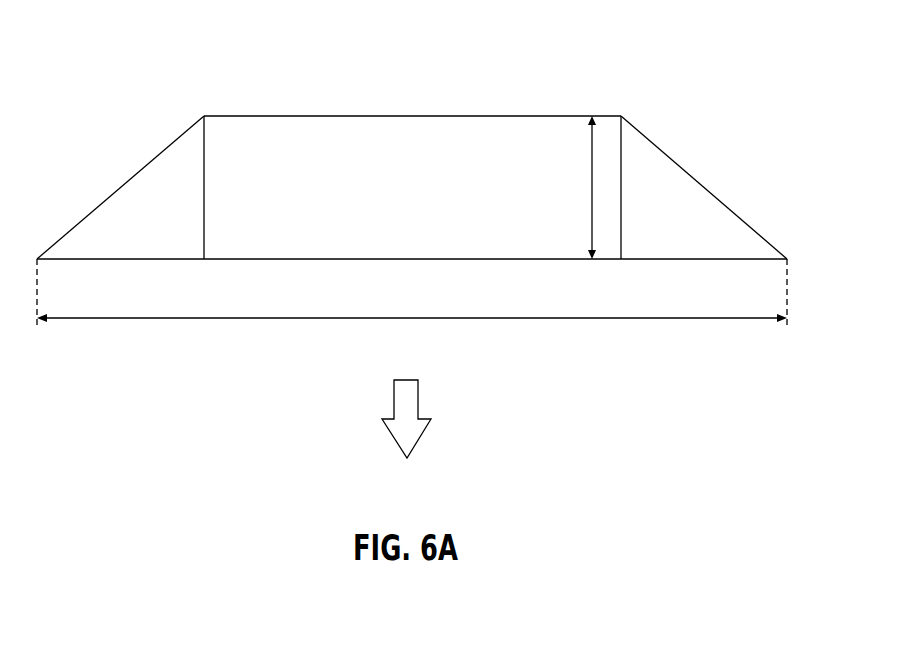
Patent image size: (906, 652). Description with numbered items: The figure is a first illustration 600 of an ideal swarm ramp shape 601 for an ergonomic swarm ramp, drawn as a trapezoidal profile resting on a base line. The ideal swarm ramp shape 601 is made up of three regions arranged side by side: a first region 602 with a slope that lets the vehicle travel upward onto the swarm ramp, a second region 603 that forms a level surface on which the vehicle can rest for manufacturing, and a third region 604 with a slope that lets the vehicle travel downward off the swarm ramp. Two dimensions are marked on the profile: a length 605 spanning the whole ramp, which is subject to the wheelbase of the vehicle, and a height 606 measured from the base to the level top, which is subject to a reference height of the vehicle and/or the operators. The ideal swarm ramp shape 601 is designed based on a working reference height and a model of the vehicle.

The first illustration 600 is at (118, 38).
The ideal swarm ramp shape 601 is at (541, 115).
The first region 602 is at (688, 237).
The second region 603 is at (429, 206).
The third region 604 is at (174, 235).
The length 605 is at (411, 319).
The height 606 is at (591, 187).